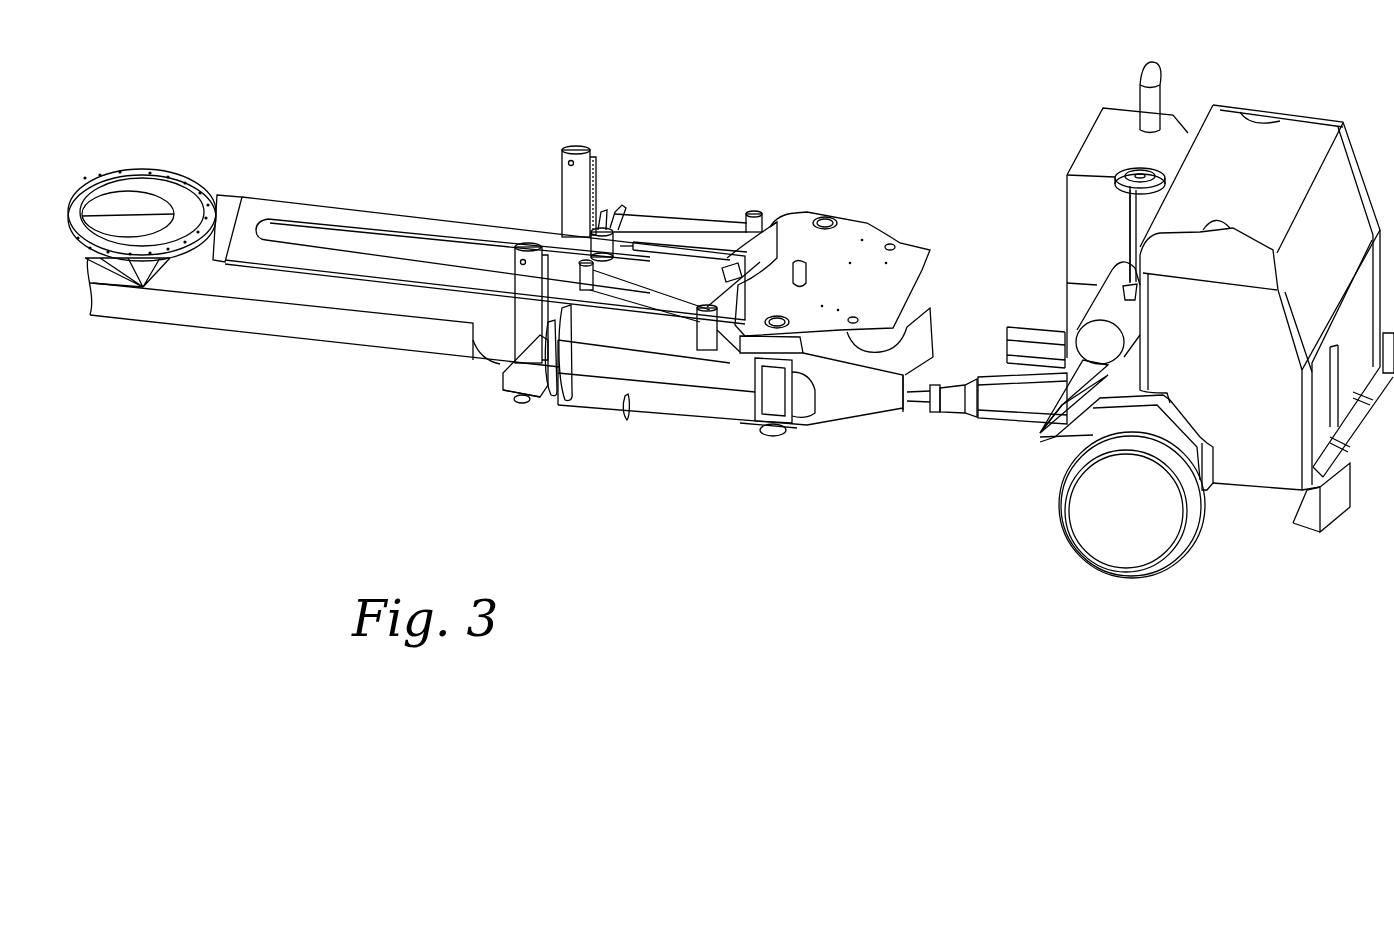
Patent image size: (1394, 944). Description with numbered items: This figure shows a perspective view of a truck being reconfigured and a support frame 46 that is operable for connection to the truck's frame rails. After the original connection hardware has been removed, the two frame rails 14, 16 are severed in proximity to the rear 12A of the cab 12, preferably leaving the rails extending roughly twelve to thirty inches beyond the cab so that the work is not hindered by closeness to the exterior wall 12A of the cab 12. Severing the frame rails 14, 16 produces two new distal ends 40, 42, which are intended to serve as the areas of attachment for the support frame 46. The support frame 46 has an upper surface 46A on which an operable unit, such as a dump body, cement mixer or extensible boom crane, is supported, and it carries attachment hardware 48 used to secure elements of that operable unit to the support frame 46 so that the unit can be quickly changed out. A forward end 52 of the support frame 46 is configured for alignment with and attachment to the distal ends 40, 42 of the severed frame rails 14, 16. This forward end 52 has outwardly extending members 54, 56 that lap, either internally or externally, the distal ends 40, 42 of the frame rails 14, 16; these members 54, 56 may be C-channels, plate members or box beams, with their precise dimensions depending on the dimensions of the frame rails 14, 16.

The cab 12 is at (1304, 137).
The rear of the cab 12A is at (1085, 148).
The frame rail 14 is at (1040, 330).
The frame rail 16 is at (1015, 417).
The distal end 40 is at (1003, 328).
The distal end 42 is at (977, 407).
The support frame 46 is at (418, 316).
The upper surface 46A is at (210, 203).
The attachment hardware 48 is at (607, 218).
The forward end 52 is at (893, 398).
The outwardly extending member 54 is at (937, 323).
The outwardly extending member 56 is at (903, 404).